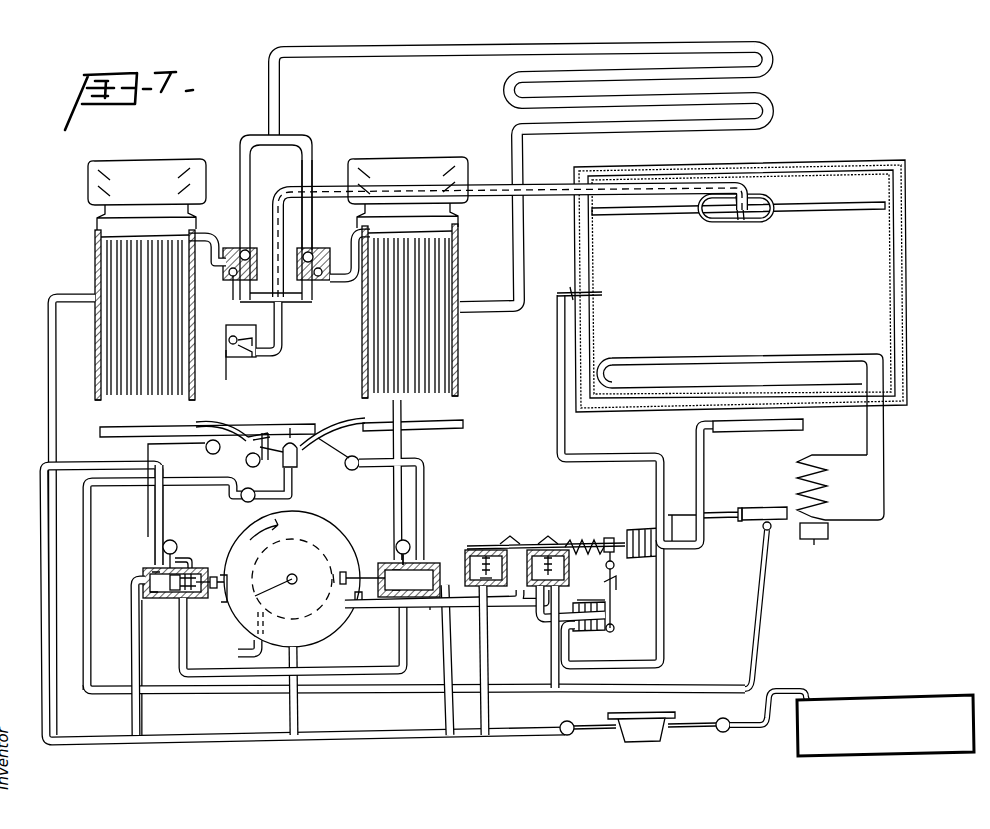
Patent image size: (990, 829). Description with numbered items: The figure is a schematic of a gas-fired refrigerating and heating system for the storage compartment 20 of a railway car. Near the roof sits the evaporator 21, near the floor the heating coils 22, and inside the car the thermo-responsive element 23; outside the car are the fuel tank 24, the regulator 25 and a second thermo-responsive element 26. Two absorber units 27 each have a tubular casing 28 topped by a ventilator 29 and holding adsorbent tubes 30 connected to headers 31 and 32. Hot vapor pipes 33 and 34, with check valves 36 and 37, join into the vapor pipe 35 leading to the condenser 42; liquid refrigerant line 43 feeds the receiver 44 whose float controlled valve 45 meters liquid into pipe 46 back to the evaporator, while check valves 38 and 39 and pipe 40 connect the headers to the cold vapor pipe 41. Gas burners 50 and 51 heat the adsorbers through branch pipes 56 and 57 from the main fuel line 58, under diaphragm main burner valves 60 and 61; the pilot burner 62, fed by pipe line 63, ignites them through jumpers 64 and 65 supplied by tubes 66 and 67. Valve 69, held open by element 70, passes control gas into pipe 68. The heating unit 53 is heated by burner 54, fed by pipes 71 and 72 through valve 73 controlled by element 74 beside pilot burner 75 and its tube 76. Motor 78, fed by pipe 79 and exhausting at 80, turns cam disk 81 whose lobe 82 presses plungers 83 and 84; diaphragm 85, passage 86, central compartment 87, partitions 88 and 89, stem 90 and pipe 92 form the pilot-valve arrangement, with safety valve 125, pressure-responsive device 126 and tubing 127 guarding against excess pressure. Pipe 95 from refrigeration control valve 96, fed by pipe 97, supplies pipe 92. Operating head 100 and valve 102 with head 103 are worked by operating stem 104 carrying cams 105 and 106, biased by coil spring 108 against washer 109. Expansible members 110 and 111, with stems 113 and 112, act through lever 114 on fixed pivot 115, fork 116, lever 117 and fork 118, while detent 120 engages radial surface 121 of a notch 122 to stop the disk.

The storage compartment 20 is at (905, 225).
The evaporator 21 is at (812, 210).
The coils 22 is at (755, 356).
The thermo-responsive element 23 is at (598, 298).
The fuel tank 24 is at (898, 694).
The regulator 25 is at (645, 744).
The thermo-responsive element 26 is at (740, 432).
The absorber units 27 is at (95, 278).
The tubular casing 28 is at (97, 345).
The ventilator 29 is at (130, 178).
The tubes 30 is at (118, 312).
The header 31 is at (135, 238).
The header 32 is at (408, 236).
The hot vapor pipe 33 is at (242, 150).
The hot vapor pipe 34 is at (312, 160).
The vapor pipe 35 is at (362, 55).
The check valve 36 is at (243, 250).
The check valve 37 is at (310, 252).
The check valve 38 is at (230, 280).
The check valve 39 is at (320, 280).
The pipe 40 is at (288, 305).
The cold vapor pipe 41 is at (290, 186).
The condenser 42 is at (770, 85).
The liquid refrigerant line 43 is at (517, 228).
The receiver 44 is at (250, 357).
The float controlled valve 45 is at (228, 350).
The pipe 46 is at (735, 222).
The gas burner 50 is at (142, 432).
The gas burner 51 is at (458, 426).
The heating unit 53 is at (828, 478).
The burner 54 is at (830, 535).
The branch pipe 56 is at (162, 492).
The branch pipe 57 is at (426, 470).
The main fuel line 58 is at (356, 735).
The main burner valve 60 is at (150, 600).
The main burner valve 61 is at (432, 572).
The pilot burner 62 is at (298, 460).
The pipe line 63 is at (42, 540).
The jumper 64 is at (232, 426).
The jumper 65 is at (340, 425).
The tube 66 is at (196, 488).
The tube 67 is at (354, 472).
The pipe 68 is at (132, 487).
The valve 69 is at (268, 430).
The thermo-responsive element 70 is at (302, 430).
The pipe 71 is at (487, 645).
The pipe 72 is at (570, 540).
The valve 73 is at (740, 510).
The thermo-responsive element 74 is at (766, 508).
The pilot burner 75 is at (770, 530).
The tube 76 is at (760, 628).
The motor 78 is at (326, 536).
The pipe 79 is at (300, 697).
The exhaust 80 is at (270, 650).
The cam disk 81 is at (300, 520).
The lobe 82 is at (272, 588).
The plunger 83 is at (230, 577).
The plunger 84 is at (310, 572).
The diaphragm 85 is at (165, 600).
The passage 86 is at (190, 556).
The central compartment 87 is at (188, 612).
The valve seat partition 88 is at (182, 574).
The valve seat partition 89 is at (196, 578).
The stem 90 is at (215, 588).
The pipe 92 is at (190, 660).
The pipe 95 is at (432, 610).
The refrigeration control valve 96 is at (564, 604).
The pipe 97 is at (553, 650).
The operating head 100 is at (542, 556).
The valve 102 is at (490, 582).
The head 103 is at (499, 553).
The operating stem 104 is at (548, 534).
The cam 105 is at (472, 552).
The cam 106 is at (512, 534).
The coil spring 108 is at (606, 552).
The washer 109 is at (590, 536).
The expansible member 110 is at (612, 602).
The expansible member 111 is at (672, 548).
The stem 112 is at (645, 526).
The stem 113 is at (606, 622).
The lever 114 is at (612, 604).
The fixed pivot 115 is at (615, 632).
The fork 116 is at (618, 580).
The lever 117 is at (615, 565).
The fork 118 is at (612, 538).
The detent 120 is at (352, 605).
The radial surface 121 is at (357, 586).
The notch 122 is at (243, 542).
The safety valve 125 is at (150, 572).
The pressure-responsive device 126 is at (163, 548).
The tubing 127 is at (48, 448).